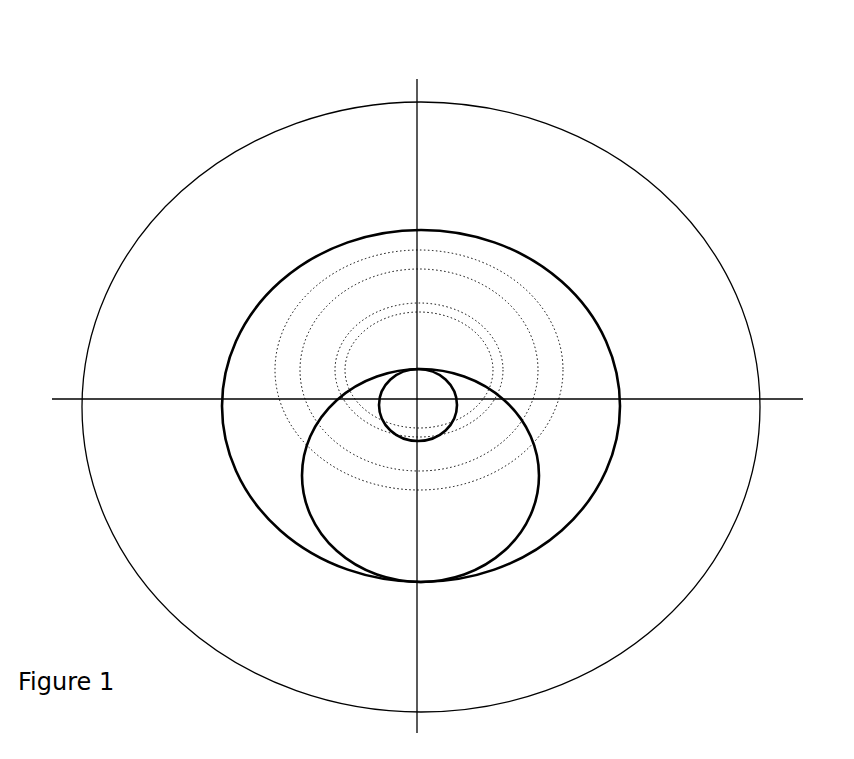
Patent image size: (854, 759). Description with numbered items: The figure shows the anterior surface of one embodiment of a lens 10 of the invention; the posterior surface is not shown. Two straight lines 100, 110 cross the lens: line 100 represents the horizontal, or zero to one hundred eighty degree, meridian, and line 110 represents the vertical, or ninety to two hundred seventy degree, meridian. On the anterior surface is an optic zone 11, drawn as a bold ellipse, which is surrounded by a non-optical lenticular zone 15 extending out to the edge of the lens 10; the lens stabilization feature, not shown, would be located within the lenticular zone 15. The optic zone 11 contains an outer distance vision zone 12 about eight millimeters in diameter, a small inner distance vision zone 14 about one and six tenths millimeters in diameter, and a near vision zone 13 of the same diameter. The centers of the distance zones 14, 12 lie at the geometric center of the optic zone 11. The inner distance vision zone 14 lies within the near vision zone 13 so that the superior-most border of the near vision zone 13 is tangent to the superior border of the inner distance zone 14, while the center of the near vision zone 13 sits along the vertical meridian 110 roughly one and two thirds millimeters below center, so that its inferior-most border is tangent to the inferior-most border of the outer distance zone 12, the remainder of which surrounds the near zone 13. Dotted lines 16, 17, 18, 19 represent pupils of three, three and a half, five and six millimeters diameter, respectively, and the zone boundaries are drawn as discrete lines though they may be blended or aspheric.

The lens 10 is at (730, 578).
The horizontal meridian line 100 is at (789, 408).
The vertical meridian line 110 is at (430, 95).
The optic zone 11 is at (615, 378).
The outer distance vision zone 12 is at (569, 468).
The near vision zone 13 is at (451, 533).
The inner distance vision zone 14 is at (431, 386).
The lenticular zone 15 is at (636, 593).
The dotted line representing 3.0 mm pupil 16 is at (448, 315).
The dotted line representing 3.5 mm pupil 17 is at (468, 315).
The dotted line representing 5.0 mm pupil 18 is at (535, 343).
The dotted line representing 6.0 mm pupil 19 is at (555, 366).